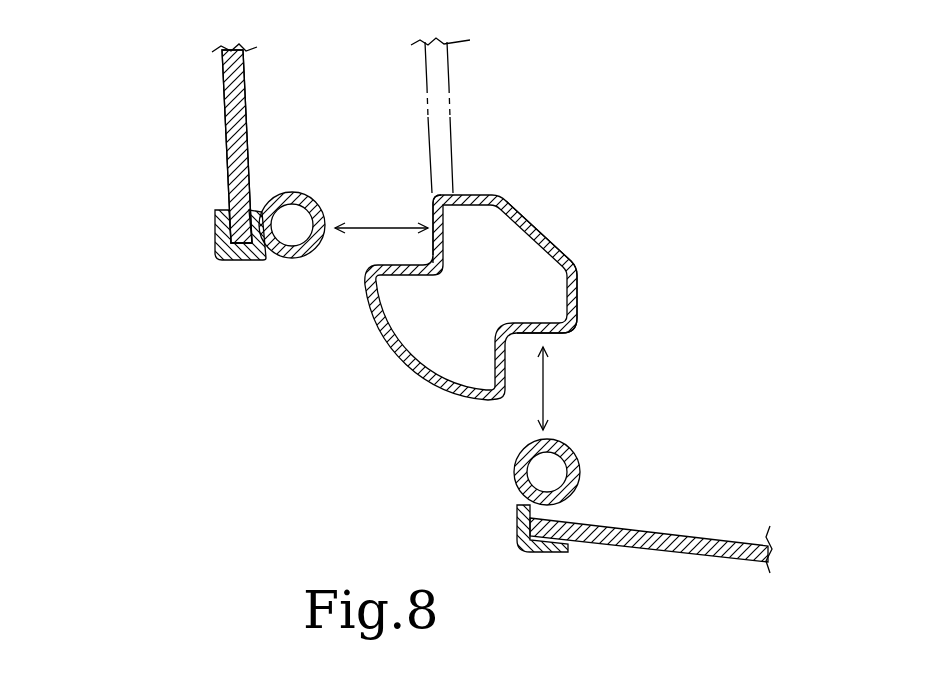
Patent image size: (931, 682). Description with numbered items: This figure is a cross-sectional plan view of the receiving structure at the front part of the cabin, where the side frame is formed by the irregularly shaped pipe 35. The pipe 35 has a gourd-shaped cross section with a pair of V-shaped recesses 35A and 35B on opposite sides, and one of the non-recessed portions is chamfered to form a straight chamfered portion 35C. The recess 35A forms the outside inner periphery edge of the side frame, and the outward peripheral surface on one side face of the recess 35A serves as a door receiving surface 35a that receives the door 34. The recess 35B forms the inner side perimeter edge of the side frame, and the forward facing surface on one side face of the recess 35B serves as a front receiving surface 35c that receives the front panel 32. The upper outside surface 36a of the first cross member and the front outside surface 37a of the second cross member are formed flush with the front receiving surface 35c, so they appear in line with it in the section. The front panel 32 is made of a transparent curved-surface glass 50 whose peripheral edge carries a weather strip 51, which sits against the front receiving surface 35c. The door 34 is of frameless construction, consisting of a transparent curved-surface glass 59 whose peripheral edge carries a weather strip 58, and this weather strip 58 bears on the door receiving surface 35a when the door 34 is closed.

The front panel 32 is at (204, 112).
The transparent curved-surface glass 50 is at (250, 115).
The weather strip 51 is at (293, 191).
The upper outside surface 36a is at (378, 98).
The front outside surface 37a is at (428, 80).
The irregularly shaped pipe 35 is at (388, 355).
The front receiving surface 35c is at (430, 221).
The recess 35B is at (408, 252).
The chamfered portion 35C is at (540, 226).
The door receiving surface 35a is at (553, 334).
The recess 35A is at (523, 358).
The weather strip 58 is at (580, 470).
The transparent curved-surface glass 59 is at (685, 528).
The door 34 is at (649, 556).